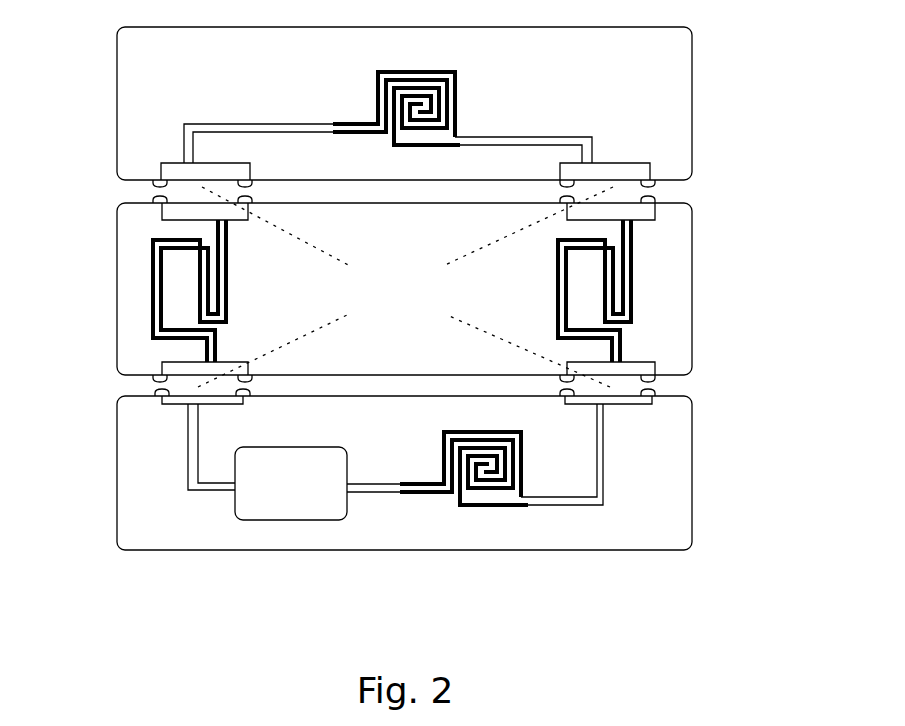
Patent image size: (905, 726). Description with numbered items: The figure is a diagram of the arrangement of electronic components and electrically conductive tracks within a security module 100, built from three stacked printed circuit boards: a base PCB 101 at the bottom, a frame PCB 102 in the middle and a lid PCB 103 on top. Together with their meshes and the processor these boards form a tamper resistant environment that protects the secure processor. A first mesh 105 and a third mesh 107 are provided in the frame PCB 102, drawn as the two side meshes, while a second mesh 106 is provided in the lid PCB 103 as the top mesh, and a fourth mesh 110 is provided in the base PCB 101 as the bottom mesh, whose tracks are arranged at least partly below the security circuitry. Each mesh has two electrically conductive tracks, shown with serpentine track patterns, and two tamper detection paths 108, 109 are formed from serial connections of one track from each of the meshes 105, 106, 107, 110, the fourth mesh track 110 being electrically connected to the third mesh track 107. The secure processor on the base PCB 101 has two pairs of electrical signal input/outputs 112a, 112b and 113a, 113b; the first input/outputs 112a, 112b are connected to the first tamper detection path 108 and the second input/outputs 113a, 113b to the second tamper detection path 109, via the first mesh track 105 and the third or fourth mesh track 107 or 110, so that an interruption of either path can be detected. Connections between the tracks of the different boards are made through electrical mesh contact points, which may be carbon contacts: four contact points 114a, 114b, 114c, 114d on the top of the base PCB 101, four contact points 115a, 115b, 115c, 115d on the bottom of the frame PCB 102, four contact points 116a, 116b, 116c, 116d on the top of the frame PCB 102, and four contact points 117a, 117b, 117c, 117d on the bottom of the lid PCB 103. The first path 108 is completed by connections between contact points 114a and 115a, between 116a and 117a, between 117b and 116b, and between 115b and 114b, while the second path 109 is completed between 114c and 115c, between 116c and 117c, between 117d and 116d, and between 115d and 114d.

The security module 100 is at (460, 562).
The base PCB 101 is at (117, 500).
The frame PCB 102 is at (117, 262).
The lid PCB 103 is at (117, 58).
The first mesh 105 is at (153, 280).
The second mesh 106 is at (455, 95).
The third mesh 107 is at (636, 270).
The first tamper detection path 108 is at (233, 123).
The second tamper detection path 109 is at (280, 131).
The fourth mesh 110 is at (508, 506).
The first electrical signal input/output 112a is at (228, 498).
The first electrical signal input/output 112b is at (350, 498).
The second electrical signal input/output 113a is at (232, 468).
The second electrical signal input/output 113b is at (350, 468).
The electrical contact point 114a is at (157, 398).
The electrical contact point 114b is at (655, 399).
The electrical contact point 114c is at (245, 403).
The electrical contact point 114d is at (570, 405).
The electrical contact point 115a is at (153, 381).
The electrical contact point 115b is at (655, 380).
The electrical contact point 115c is at (243, 369).
The electrical contact point 115d is at (567, 366).
The electrical contact point 116a is at (160, 204).
The electrical contact point 116b is at (655, 204).
The electrical contact point 116c is at (250, 205).
The electrical contact point 116d is at (565, 204).
The electrical contact point 117a is at (153, 187).
The electrical contact point 117b is at (653, 184).
The electrical contact point 117c is at (252, 177).
The electrical contact point 117d is at (560, 178).